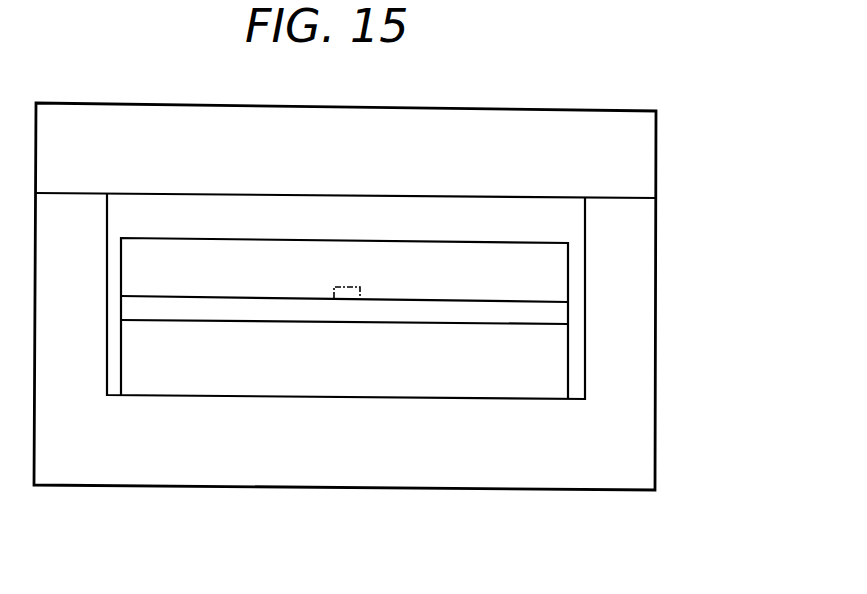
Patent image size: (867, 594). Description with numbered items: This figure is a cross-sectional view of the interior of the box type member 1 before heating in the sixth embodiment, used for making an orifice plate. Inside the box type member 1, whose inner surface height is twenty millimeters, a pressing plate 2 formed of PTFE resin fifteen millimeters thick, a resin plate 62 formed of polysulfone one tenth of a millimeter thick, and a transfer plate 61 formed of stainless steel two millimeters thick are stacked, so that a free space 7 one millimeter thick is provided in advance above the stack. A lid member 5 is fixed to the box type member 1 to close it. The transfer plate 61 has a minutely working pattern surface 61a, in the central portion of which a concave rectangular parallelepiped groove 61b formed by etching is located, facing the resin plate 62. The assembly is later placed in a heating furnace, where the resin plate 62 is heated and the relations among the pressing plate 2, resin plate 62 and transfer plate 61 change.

The box type member 1 is at (627, 465).
The pressing plate 2 is at (557, 374).
The lid member 5 is at (633, 153).
The free space 7 is at (565, 226).
The transfer plate 61 is at (550, 259).
The minutely working pattern surface 61a is at (540, 302).
The concave rectangular parallelepiped groove 61b is at (345, 299).
The resin plate 62 is at (485, 317).